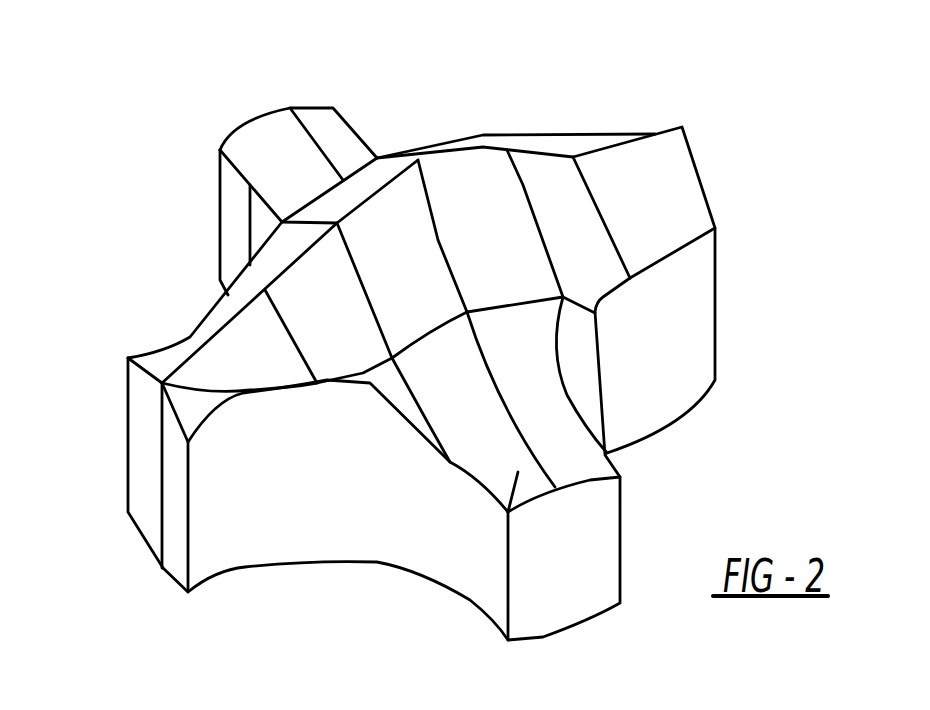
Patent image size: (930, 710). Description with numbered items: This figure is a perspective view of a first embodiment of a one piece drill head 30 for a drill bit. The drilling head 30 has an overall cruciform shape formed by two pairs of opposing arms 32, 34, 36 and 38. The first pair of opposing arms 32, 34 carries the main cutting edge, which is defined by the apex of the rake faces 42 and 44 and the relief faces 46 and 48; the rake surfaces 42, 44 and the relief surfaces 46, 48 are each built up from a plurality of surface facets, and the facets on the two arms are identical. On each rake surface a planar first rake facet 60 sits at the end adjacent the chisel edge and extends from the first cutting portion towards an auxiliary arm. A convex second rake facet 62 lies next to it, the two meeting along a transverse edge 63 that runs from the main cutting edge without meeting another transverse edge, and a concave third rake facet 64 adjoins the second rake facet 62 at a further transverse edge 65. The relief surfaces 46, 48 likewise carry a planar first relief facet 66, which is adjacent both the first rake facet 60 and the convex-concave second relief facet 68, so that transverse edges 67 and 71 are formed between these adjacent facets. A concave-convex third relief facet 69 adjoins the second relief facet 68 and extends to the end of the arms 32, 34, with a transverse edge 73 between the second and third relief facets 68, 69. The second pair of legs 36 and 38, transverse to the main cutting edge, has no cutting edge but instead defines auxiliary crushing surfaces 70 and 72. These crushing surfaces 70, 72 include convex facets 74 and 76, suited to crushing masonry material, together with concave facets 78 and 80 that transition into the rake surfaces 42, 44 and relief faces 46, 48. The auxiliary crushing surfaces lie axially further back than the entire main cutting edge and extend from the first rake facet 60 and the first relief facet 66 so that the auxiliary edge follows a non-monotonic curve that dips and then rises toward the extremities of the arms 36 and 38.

The drill head 30 is at (128, 146).
The arm 32 is at (657, 135).
The arm 34 is at (167, 350).
The arm 36 is at (602, 547).
The arm 38 is at (315, 120).
The rake face 42 is at (273, 378).
The rake face 44 is at (515, 131).
The relief face 46 is at (268, 268).
The relief face 48 is at (567, 202).
The first rake facet 60 is at (396, 277).
The second rake facet 62 is at (311, 332).
The transverse edge 63 is at (347, 380).
The third rake facet 64 is at (236, 374).
The transverse edge 65 is at (300, 383).
The first relief facet 66 is at (453, 232).
The transverse edge 67 is at (418, 187).
The second relief facet 68 is at (559, 244).
The third relief facet 69 is at (641, 204).
The auxiliary crushing surface 70 is at (540, 420).
The transverse edge 71 is at (523, 185).
The auxiliary crushing surface 72 is at (263, 145).
The transverse edge 73 is at (573, 157).
The convex facet 74 is at (560, 462).
The convex facet 76 is at (518, 472).
The concave facet 78 is at (428, 423).
The concave facet 80 is at (582, 343).